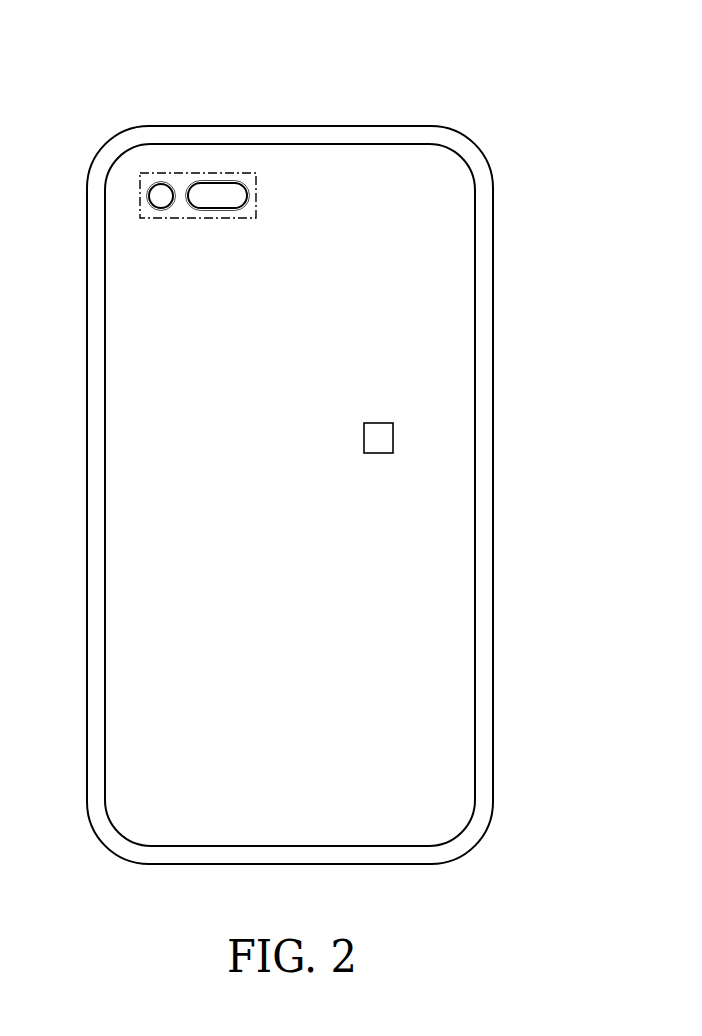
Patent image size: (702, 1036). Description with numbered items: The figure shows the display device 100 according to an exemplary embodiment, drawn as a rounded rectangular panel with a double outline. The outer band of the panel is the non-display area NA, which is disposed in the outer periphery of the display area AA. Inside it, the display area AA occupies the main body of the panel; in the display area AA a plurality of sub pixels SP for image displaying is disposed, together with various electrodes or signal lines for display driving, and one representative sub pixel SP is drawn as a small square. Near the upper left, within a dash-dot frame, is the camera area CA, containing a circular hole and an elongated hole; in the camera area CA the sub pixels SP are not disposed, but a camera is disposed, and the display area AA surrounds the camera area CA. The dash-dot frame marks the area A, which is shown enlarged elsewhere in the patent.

The display device 100 is at (443, 44).
The display area AA is at (440, 346).
The non-display area NA is at (483, 295).
The area A is at (140, 194).
The camera area CA is at (160, 183).
The sub pixel SP is at (393, 437).